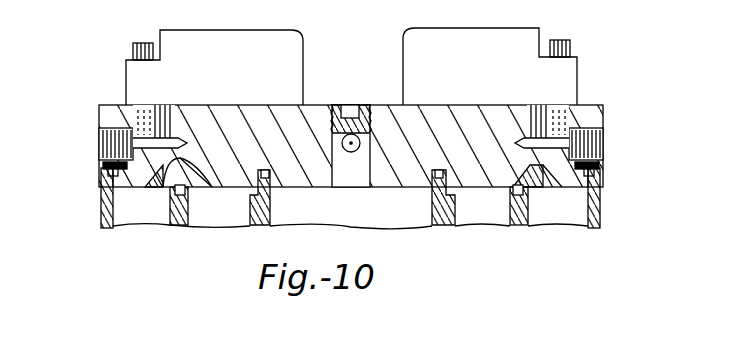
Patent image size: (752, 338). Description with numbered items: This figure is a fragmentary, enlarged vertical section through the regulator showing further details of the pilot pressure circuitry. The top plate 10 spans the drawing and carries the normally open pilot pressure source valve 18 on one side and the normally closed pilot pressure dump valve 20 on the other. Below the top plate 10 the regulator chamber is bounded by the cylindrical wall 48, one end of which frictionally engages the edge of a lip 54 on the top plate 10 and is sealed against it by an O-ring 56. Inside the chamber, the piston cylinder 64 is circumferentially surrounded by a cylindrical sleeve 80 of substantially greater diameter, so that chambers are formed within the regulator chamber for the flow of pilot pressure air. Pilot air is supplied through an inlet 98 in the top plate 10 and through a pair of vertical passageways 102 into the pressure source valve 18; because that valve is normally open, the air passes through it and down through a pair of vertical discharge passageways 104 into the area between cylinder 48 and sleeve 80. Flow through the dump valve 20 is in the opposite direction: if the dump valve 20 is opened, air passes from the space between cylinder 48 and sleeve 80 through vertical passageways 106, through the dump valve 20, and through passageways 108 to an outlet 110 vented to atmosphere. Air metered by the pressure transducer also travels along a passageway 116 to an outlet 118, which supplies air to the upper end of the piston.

The top plate 10 is at (313, 125).
The pilot pressure source valve 18 is at (478, 37).
The pilot pressure dump valve 20 is at (225, 40).
The cylindrical wall 48 is at (102, 209).
The lip 54 is at (102, 185).
The O-ring 56 is at (107, 168).
The piston cylinder 64 is at (260, 228).
The cylindrical sleeve 80 is at (183, 226).
The inlet 98 is at (600, 142).
The vertical passageways 102 is at (535, 105).
The vertical discharge passageways 104 is at (538, 184).
The vertical passageways 106 is at (208, 175).
The passageways 108 is at (150, 106).
The outlet 110 is at (98, 144).
The passageway 116 is at (375, 132).
The outlet 118 is at (352, 180).